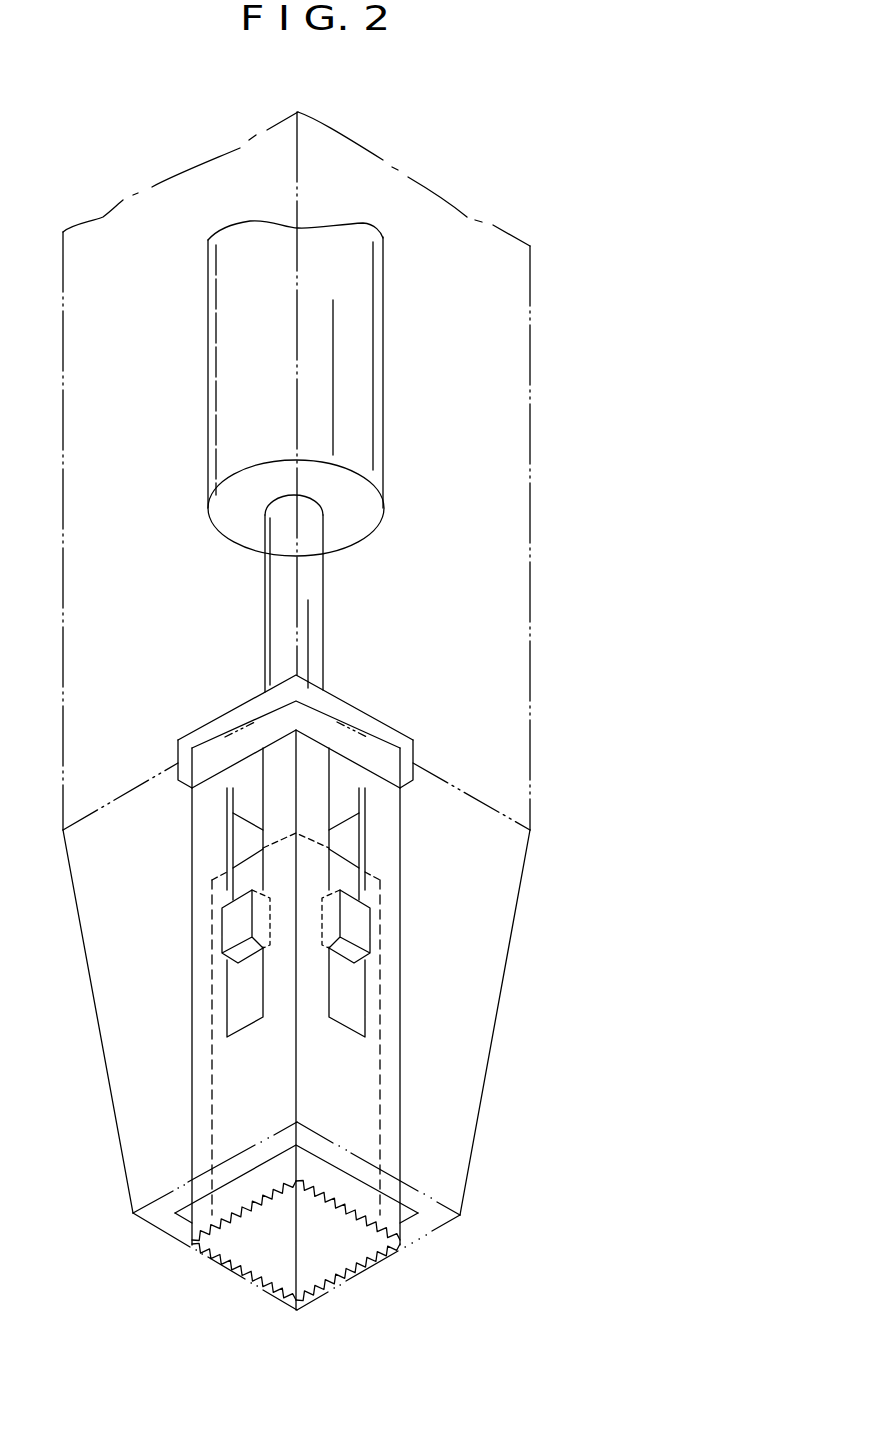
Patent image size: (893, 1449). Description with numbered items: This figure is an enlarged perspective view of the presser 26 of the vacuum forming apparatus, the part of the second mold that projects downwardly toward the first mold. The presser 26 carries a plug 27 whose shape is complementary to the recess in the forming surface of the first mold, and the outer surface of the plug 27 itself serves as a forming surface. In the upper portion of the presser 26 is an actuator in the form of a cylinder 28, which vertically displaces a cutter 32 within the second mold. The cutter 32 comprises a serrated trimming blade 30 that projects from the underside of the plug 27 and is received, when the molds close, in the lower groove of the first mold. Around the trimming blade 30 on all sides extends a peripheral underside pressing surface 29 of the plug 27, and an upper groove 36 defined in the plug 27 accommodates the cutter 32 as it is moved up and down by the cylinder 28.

The presser 26 is at (556, 440).
The plug 27 is at (448, 1163).
The cylinder 28 is at (355, 364).
The peripheral underside pressing surface 29 is at (148, 1220).
The trimming blade 30 is at (388, 1108).
The cutter 32 is at (392, 742).
The upper groove 36 is at (153, 1214).